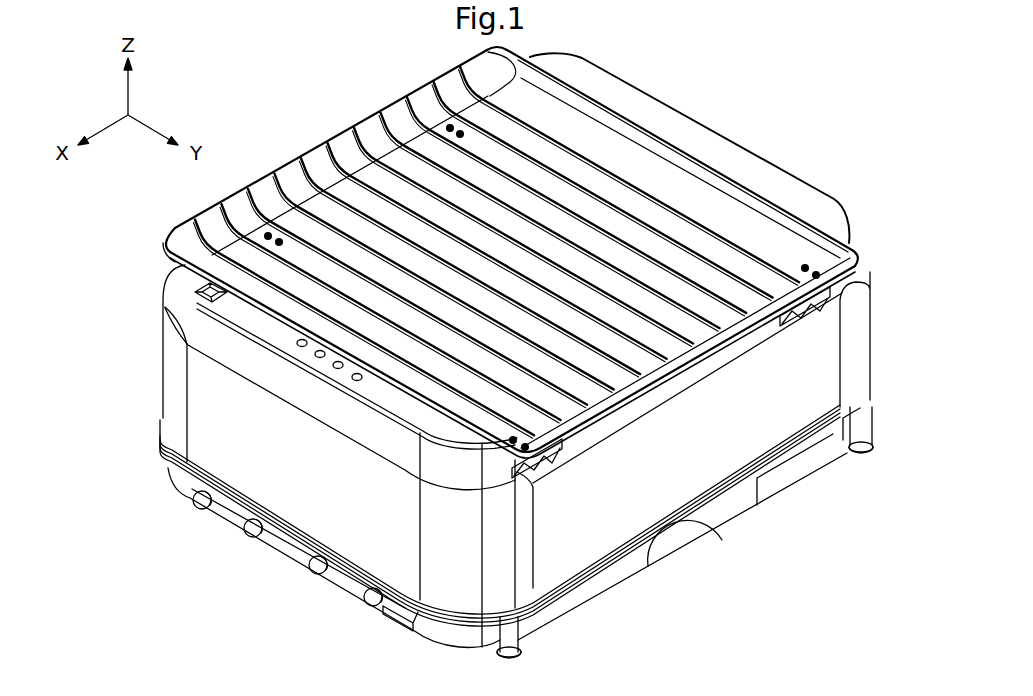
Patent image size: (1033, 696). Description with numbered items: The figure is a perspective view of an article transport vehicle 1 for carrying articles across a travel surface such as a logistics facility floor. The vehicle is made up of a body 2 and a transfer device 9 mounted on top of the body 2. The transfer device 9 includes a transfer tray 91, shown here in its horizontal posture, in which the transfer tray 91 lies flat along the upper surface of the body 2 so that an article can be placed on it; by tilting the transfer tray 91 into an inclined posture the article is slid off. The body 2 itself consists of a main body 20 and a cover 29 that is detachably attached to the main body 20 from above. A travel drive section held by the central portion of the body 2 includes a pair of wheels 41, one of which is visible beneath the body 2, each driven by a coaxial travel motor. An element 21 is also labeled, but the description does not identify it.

The article transport vehicle 1 is at (147, 222).
The body 2 is at (135, 409).
The transfer device 9 is at (386, 98).
The transfer tray 91 is at (611, 157).
The main body 20 is at (813, 487).
The bumper 21 is at (588, 588).
The cover 29 is at (820, 357).
The wheel 41 is at (681, 554).